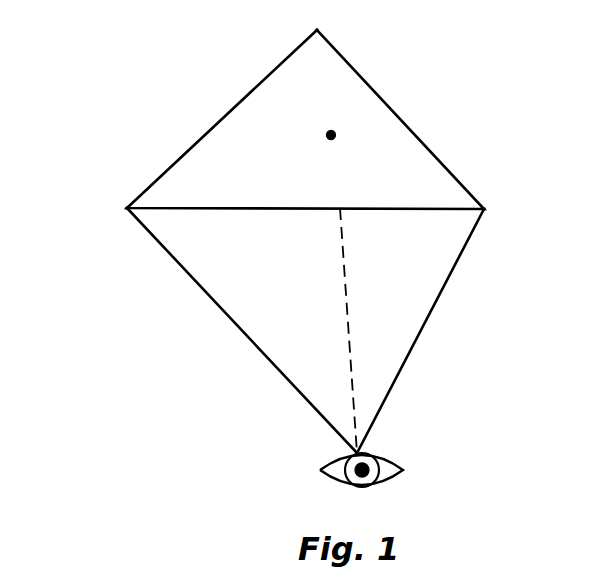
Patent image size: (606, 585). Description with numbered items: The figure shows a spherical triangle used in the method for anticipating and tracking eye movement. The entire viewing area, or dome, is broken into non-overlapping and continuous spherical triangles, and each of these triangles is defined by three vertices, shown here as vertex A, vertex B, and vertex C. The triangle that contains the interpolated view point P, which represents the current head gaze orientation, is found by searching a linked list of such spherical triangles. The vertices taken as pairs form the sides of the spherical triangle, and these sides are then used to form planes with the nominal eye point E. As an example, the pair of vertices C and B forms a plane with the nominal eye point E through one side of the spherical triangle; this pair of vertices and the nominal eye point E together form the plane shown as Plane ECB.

The vertex A is at (317, 30).
The vertex B is at (484, 209).
The vertex C is at (127, 208).
The interpolated view point P is at (331, 135).
The nominal eye point E is at (395, 462).
The plane ECB Plane ECB is at (405, 342).